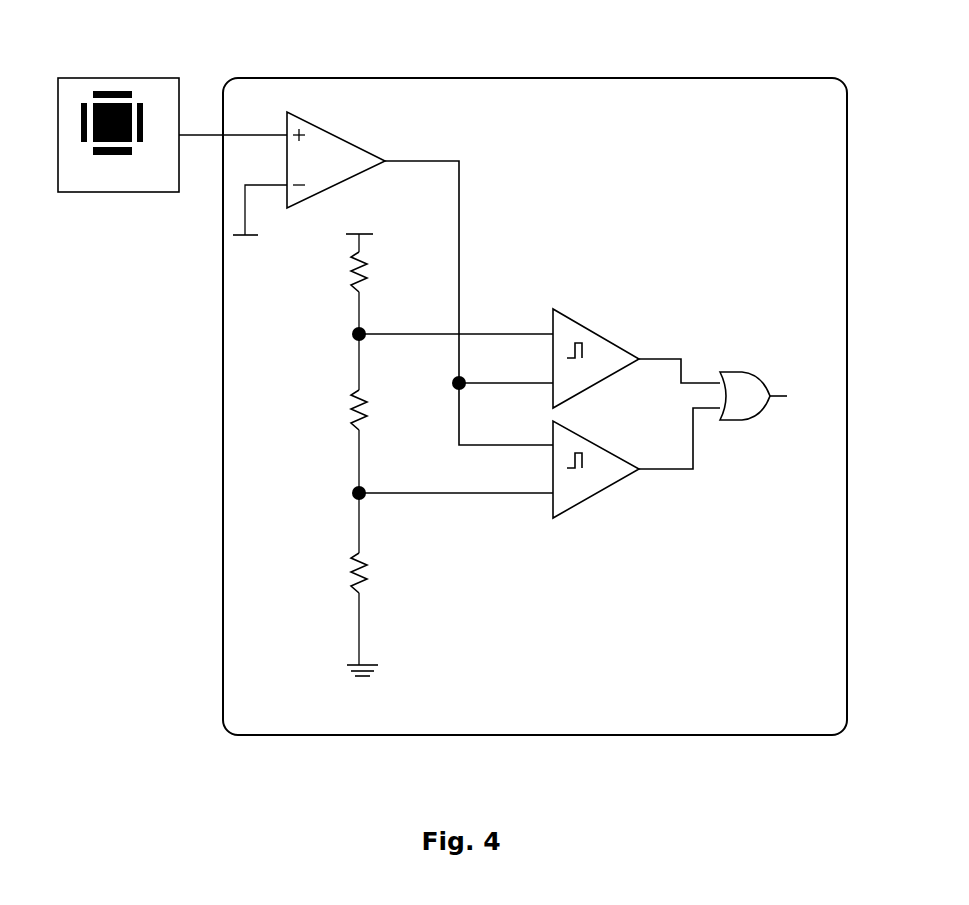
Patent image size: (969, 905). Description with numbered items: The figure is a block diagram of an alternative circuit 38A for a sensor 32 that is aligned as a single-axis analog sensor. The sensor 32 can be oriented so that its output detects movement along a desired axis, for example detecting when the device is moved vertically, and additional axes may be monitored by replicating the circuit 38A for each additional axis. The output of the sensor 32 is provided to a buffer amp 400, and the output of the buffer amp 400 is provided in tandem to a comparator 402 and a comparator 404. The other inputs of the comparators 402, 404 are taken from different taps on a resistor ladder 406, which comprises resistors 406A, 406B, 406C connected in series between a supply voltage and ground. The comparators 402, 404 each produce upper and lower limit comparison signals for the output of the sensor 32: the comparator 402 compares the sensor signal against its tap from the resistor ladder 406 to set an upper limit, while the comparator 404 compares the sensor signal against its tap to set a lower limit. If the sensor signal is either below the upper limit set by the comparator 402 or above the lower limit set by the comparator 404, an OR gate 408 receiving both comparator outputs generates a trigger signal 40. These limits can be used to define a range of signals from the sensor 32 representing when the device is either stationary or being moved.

The alternative circuit 38A is at (535, 375).
The sensor 32 is at (158, 162).
The buffer amp 400 is at (393, 278).
The resistor ladder 406 is at (402, 446).
The resistor 406A is at (391, 272).
The resistor 406B is at (391, 410).
The resistor 406C is at (391, 573).
The comparator 402 is at (636, 358).
The comparator 404 is at (636, 463).
The OR gate 408 is at (745, 383).
The trigger signal 40 is at (777, 406).